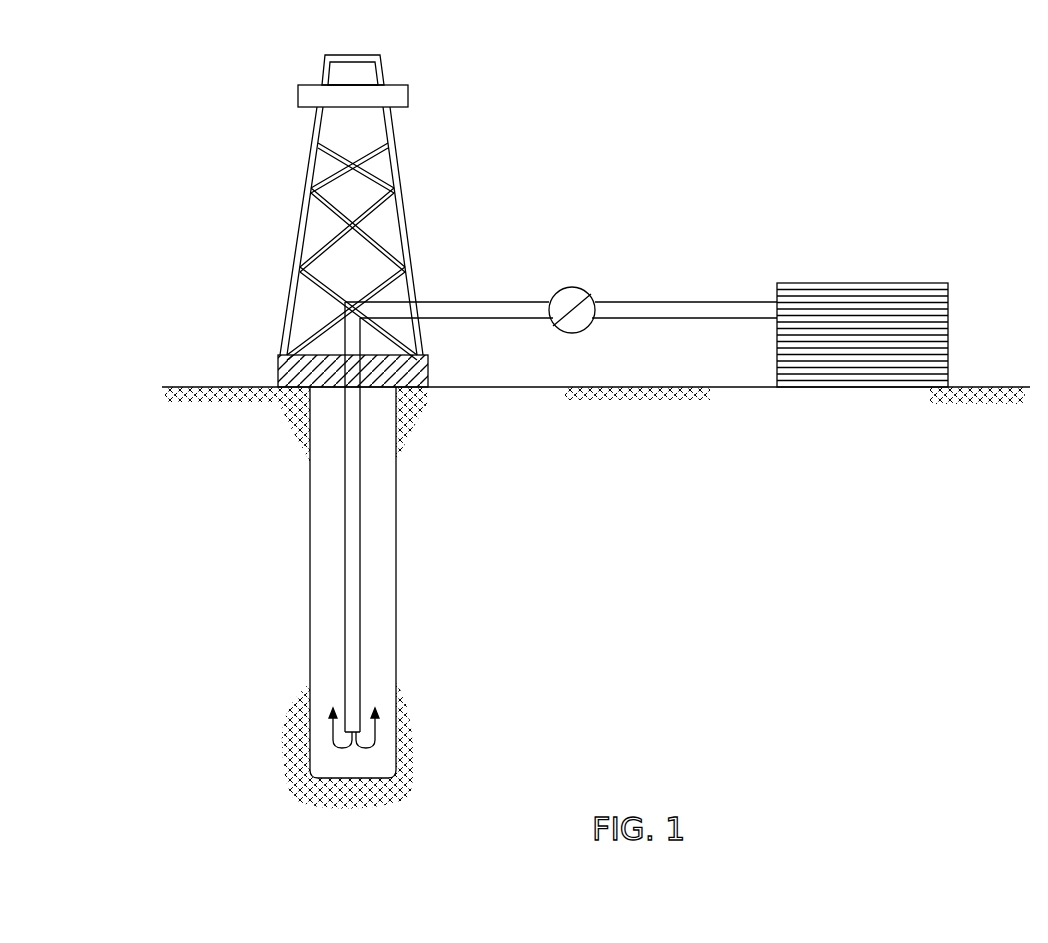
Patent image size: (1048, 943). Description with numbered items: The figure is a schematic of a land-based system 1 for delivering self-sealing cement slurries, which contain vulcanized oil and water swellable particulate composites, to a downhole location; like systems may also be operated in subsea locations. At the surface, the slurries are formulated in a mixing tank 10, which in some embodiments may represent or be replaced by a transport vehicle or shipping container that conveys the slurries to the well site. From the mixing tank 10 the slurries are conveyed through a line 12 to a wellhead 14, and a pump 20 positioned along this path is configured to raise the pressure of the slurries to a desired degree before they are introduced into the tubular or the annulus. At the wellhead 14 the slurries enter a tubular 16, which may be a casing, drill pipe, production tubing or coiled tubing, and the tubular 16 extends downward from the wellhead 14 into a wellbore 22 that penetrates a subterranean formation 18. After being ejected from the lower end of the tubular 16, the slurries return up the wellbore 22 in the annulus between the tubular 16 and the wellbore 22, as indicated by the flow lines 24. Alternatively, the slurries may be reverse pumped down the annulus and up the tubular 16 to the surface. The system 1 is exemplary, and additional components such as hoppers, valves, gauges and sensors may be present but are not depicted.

The system 1 is at (154, 58).
The mixing tank 10 is at (925, 285).
The line 12 is at (485, 300).
The wellhead 14 is at (278, 372).
The tubular 16 is at (360, 507).
The subterranean formation 18 is at (232, 590).
The pump 20 is at (600, 287).
The wellbore 22 is at (396, 600).
The flow lines 24 is at (320, 727).